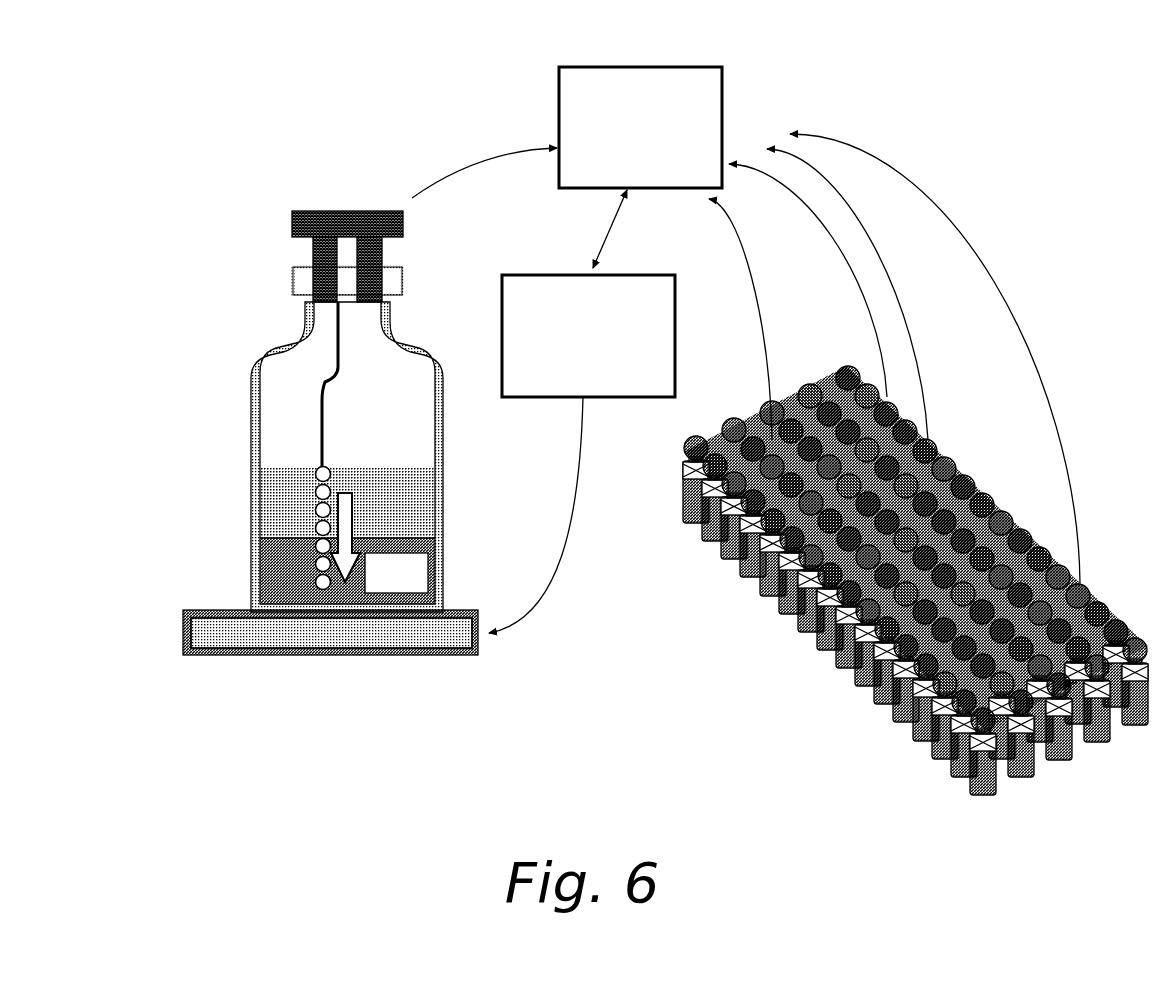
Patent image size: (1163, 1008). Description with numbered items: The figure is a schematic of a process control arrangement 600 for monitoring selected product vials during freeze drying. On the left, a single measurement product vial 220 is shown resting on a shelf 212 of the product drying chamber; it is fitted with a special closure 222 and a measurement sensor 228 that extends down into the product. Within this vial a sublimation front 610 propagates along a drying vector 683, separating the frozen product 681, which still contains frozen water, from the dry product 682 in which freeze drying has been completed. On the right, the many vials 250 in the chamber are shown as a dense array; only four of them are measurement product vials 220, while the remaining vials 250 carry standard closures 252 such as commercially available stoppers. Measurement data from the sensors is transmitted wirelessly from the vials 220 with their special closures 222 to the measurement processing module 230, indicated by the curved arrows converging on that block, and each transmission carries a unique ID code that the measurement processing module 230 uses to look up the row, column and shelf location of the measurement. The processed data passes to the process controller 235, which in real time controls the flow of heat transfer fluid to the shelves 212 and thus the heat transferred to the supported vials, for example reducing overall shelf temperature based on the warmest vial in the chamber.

The process control arrangement 600 is at (520, 66).
The measurement product vial 220 is at (251, 377).
The special closure 222 is at (338, 207).
The measurement sensor 228 is at (320, 502).
The drying vector 683 is at (352, 510).
The dry product 682 is at (347, 503).
The frozen product 681 is at (347, 571).
The sublimation front 610 is at (423, 541).
The shelf 212 is at (480, 648).
The measurement processing module 230 is at (722, 107).
The process controller 235 is at (675, 338).
The vial 250 is at (883, 590).
The standard closure 252 is at (683, 453).